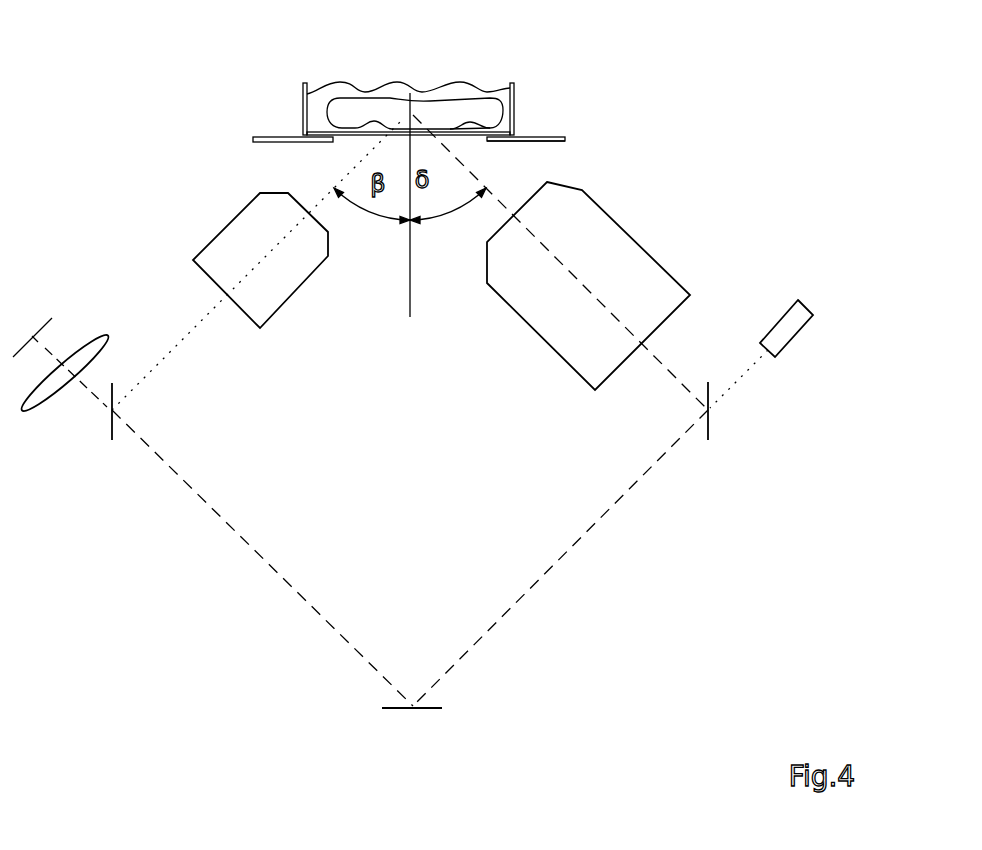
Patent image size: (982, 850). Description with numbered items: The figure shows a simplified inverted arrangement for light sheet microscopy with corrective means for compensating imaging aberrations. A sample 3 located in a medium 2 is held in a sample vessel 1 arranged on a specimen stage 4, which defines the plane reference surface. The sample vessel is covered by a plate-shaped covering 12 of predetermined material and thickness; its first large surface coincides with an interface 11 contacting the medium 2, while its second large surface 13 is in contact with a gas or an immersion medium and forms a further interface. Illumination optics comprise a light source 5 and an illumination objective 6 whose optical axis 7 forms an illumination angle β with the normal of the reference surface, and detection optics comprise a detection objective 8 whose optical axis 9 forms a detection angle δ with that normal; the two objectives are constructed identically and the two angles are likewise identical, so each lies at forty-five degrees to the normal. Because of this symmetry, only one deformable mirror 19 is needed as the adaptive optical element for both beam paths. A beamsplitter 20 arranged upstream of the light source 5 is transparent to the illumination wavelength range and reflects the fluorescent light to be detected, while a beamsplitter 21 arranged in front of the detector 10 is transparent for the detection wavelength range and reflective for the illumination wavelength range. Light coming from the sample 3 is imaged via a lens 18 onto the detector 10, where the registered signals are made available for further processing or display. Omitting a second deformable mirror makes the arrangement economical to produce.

The sample vessel 1 is at (515, 96).
The medium 2 is at (320, 86).
The sample 3 is at (372, 108).
The specimen stage 4 is at (260, 137).
The light source 5 is at (795, 312).
The illumination objective 6 is at (230, 233).
The optical axis of the illumination objective 7 is at (170, 353).
The detection objective 8 is at (628, 247).
The optical axis of the detection objective 9 is at (667, 360).
The detector 10 is at (43, 320).
The interface 11 is at (468, 128).
The plate-shaped covering 12 is at (520, 131).
The second large surface 13 is at (483, 140).
The lens 18 is at (35, 403).
The deformable mirror 19 is at (442, 706).
The beamsplitter 20 is at (110, 422).
The beamsplitter 21 is at (712, 430).